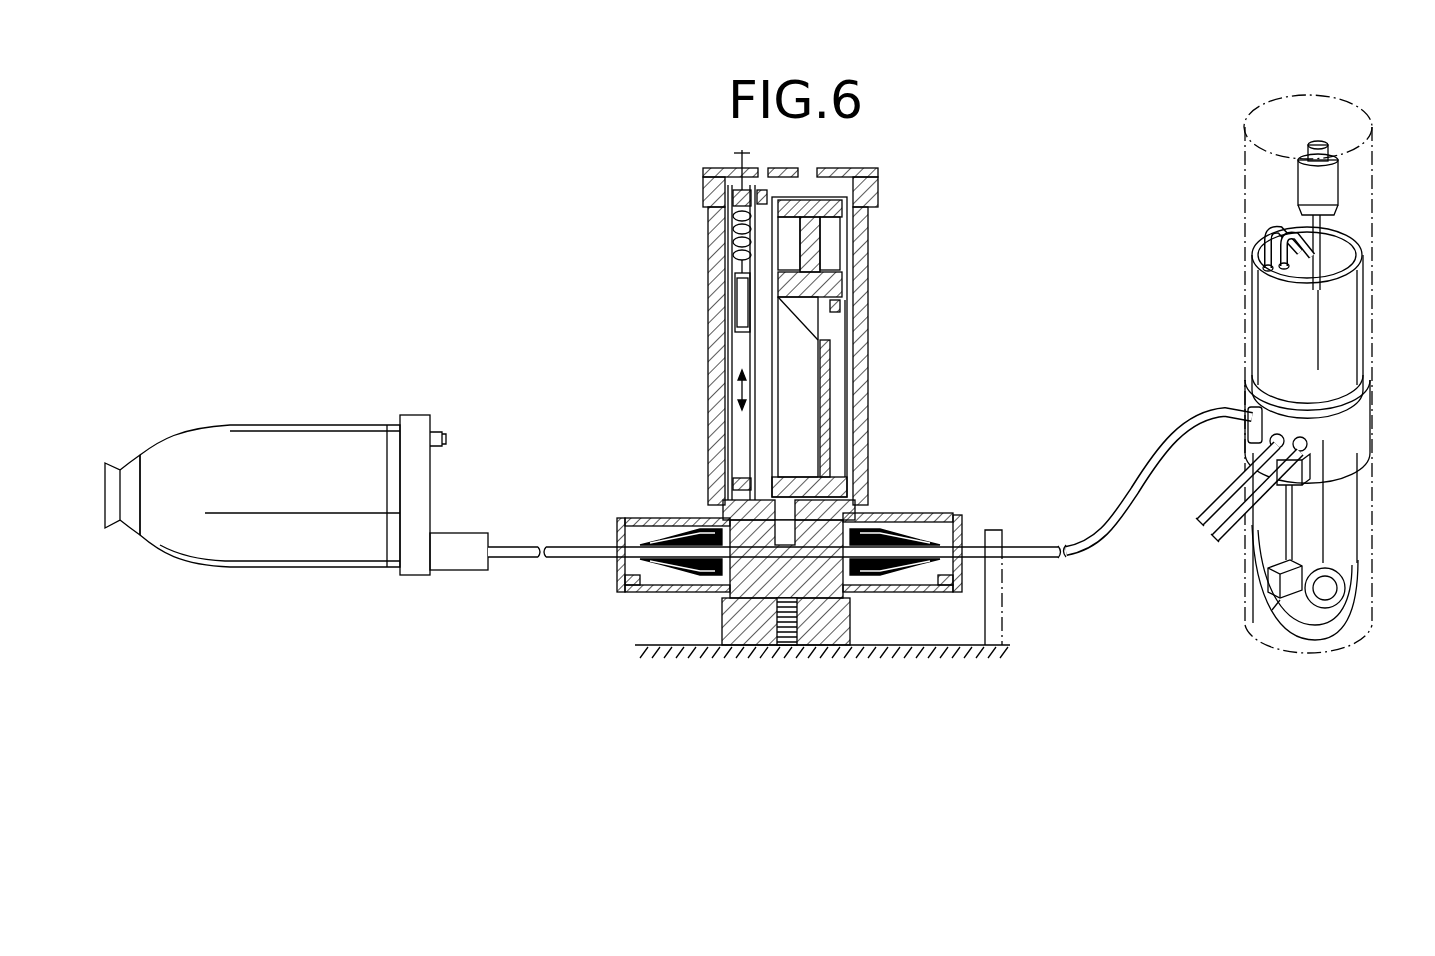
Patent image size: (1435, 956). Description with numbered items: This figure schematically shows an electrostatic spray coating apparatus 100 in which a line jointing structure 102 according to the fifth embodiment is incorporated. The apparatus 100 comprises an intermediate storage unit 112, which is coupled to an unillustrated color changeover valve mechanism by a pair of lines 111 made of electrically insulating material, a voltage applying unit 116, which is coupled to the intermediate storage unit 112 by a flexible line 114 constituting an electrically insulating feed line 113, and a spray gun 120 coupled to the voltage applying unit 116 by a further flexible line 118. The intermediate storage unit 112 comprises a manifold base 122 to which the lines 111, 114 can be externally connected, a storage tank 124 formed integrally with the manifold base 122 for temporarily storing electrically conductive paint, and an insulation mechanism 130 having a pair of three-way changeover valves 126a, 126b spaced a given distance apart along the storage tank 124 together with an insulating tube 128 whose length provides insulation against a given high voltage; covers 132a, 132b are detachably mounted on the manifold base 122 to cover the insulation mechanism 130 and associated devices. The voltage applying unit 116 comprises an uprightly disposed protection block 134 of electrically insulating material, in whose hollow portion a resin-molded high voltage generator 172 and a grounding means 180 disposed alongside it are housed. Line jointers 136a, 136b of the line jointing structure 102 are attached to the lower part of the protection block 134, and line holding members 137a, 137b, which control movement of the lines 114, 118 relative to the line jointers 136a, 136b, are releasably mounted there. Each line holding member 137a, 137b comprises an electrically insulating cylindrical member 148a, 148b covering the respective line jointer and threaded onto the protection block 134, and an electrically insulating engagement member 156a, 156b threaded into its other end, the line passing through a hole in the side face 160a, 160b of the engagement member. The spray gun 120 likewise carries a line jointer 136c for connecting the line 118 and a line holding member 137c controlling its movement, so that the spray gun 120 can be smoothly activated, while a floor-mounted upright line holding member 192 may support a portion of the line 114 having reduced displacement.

The electrostatic spray coating apparatus 100 is at (1040, 147).
The line jointing structure 102 is at (943, 442).
The lines 111 is at (1225, 480).
The intermediate storage unit 112 is at (1225, 205).
The feed line 113 is at (1063, 512).
The flexible line 114 is at (1120, 495).
The voltage applying unit 116 is at (880, 282).
The line 118 is at (567, 546).
The spray gun 120 is at (300, 420).
The manifold base 122 is at (1252, 402).
The storage tank 124 is at (1338, 487).
The three-way changeover valve 126a is at (1342, 462).
The three-way changeover valve 126b is at (1335, 572).
The insulating tube 128 is at (1293, 537).
The insulation mechanism 130 is at (1262, 542).
The cover 132a is at (1357, 162).
The cover 132b is at (1265, 640).
The protection block 134 is at (872, 402).
The line jointer 136a is at (888, 522).
The line jointer 136b is at (662, 530).
The line jointer 136c is at (468, 565).
The line holding member 137a is at (915, 530).
The line holding member 137b is at (610, 673).
The line holding member 137c is at (445, 533).
The cylindrical member 148a is at (892, 595).
The cylindrical member 148b is at (675, 595).
The engagement member 156a is at (965, 515).
The engagement member 156b is at (613, 514).
The side face 160a is at (958, 595).
The side face 160b is at (638, 595).
The high voltage generator 172 is at (853, 330).
The grounding means 180 is at (726, 316).
The line holding member 192 is at (1003, 630).